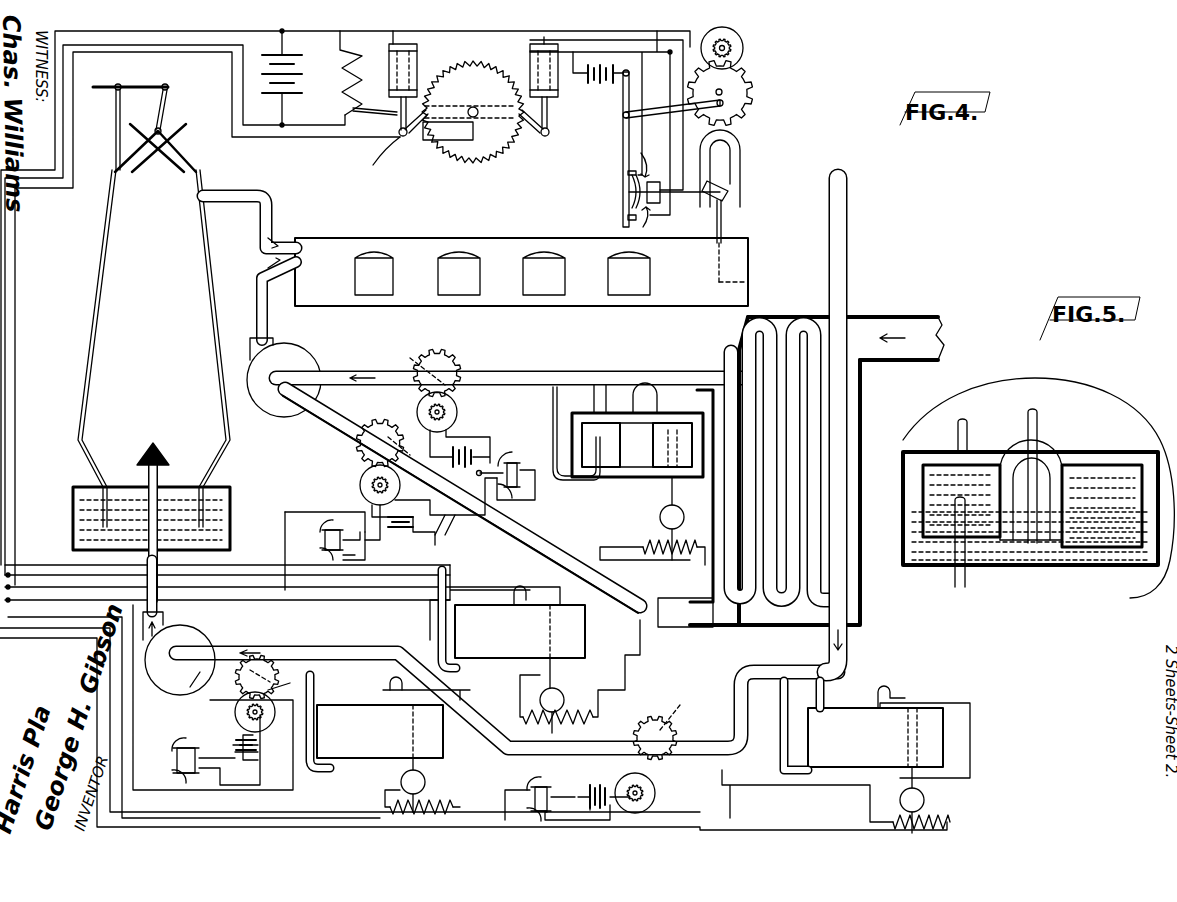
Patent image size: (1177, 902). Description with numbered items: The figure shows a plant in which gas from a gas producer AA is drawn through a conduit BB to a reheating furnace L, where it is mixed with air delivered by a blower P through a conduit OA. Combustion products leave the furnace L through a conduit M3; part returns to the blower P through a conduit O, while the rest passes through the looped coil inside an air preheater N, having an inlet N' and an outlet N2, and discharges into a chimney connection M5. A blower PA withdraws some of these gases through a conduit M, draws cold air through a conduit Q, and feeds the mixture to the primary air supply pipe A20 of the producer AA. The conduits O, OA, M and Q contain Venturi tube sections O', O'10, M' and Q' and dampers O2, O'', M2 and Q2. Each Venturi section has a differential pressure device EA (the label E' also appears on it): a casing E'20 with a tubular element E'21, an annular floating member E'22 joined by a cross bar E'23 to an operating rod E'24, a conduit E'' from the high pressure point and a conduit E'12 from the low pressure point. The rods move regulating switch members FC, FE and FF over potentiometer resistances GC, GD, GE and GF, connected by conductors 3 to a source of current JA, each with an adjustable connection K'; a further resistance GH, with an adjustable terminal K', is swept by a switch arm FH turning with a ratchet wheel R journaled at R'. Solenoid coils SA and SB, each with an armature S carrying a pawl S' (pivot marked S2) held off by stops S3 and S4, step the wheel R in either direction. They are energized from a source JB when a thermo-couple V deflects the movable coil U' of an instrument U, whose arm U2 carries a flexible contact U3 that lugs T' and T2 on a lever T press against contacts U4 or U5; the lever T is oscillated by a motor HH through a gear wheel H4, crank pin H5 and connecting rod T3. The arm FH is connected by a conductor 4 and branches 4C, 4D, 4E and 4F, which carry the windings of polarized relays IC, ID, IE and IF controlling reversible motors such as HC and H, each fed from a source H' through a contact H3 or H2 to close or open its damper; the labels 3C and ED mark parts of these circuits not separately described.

In FIG. 4, the conductors 3 is at (205, 33).
In FIG. 4, the conductor 4 is at (62, 193).
In FIG. 4, the adjustable connection K' is at (674, 428).
In FIG. 4, the potentiometer resistance conductor GH is at (345, 75).
In FIG. 4, the source of current JA is at (300, 90).
In FIG. 4, the switch arm FH is at (380, 114).
In FIG. 4, the solenoid coil SA is at (417, 52).
In FIG. 4, the solenoid coil SB is at (530, 60).
In FIG. 4, the ratchet wheel R is at (473, 112).
In FIG. 4, the journal R' is at (487, 103).
In FIG. 4, the pawl S' is at (470, 120).
In FIG. 4, the armature S is at (467, 145).
In FIG. 4, the pawl pivot S2 is at (405, 136).
In FIG. 4, the stop S3 is at (437, 140).
In FIG. 4, the stop S4 is at (540, 136).
In FIG. 4, the source of current JB is at (594, 86).
In FIG. 4, the lever T is at (606, 129).
In FIG. 4, the connecting rod T3 is at (635, 105).
In FIG. 4, the lug T' is at (609, 165).
In FIG. 4, the lug T2 is at (626, 218).
In FIG. 4, the electrical instrument U is at (735, 168).
In FIG. 4, the movable coil U' is at (737, 190).
In FIG. 4, the pointer arm U2 is at (710, 241).
In FIG. 4, the flexible contact device U3 is at (625, 192).
In FIG. 4, the contacts U4 is at (643, 160).
In FIG. 4, the contacts U5 is at (656, 224).
In FIG. 4, the electric motor HH is at (743, 51).
In FIG. 4, the gear wheel H4 is at (745, 98).
In FIG. 4, the crank pin H5 is at (740, 110).
In FIG. 4, the thermo-couple V is at (752, 280).
In FIG. 4, the reheating furnace L is at (360, 243).
In FIG. 4, the gas producer AA is at (88, 275).
In FIG. 4, the branch conductor 4C is at (285, 517).
In FIG. 4, the conduit BB is at (245, 193).
In FIG. 4, the blower P is at (300, 362).
In FIG. 4, the conduit O is at (509, 360).
In FIG. 4, the conduit OA is at (330, 418).
In FIG. 4, the Venturi tube section O' is at (573, 355).
In FIG. 4, the conduit M3 is at (730, 330).
In FIG. 4, the outlet N2 is at (704, 622).
In FIG. 4, the damper O2 is at (430, 367).
In FIG. 4, the damper O'' is at (383, 435).
In FIG. 4, the motor HC is at (458, 422).
In FIG. 4, the motor terminal contact H3 is at (533, 606).
In FIG. 4, the source of current H' is at (504, 624).
In FIG. 4, the polarized relay IC is at (520, 492).
In FIG. 4, the reversible electric motor H is at (460, 639).
In FIG. 4, the motor contact H2 is at (493, 658).
In FIG. 4, the relay ID is at (323, 532).
In FIG. 4, the Venturi tube section O'10 is at (466, 532).
In FIG. 4, the conduit E'' is at (647, 521).
In FIG. 5, the conduit E'' is at (978, 435).
In FIG. 4, the conduit E'12 is at (580, 570).
In FIG. 5, the conduit E'12 is at (981, 554).
In FIG. 4, the differential pressure device EA is at (580, 423).
In FIG. 5, the differential pressure device EA is at (922, 568).
In FIG. 4, the regulating switch member FC is at (668, 490).
In FIG. 4, the potentiometer resistance GC is at (660, 520).
In FIG. 4, the circuit 3C is at (610, 565).
In FIG. 4, the inlet N' is at (859, 338).
In FIG. 4, the air preheating device N is at (799, 471).
In FIG. 4, the conduit M is at (529, 537).
In FIG. 4, the chimney connection M5 is at (848, 262).
In FIG. 4, the Venturi tube section M' is at (778, 654).
In FIG. 4, the damper M2 is at (665, 727).
In FIG. 4, the primary air supply pipe A20 is at (158, 600).
In FIG. 4, the blower PA is at (200, 640).
In FIG. 4, the conduit Q is at (191, 689).
In FIG. 4, the damper Q2 is at (268, 676).
In FIG. 4, the Venturi tube section Q' is at (283, 717).
In FIG. 4, the conductor 4E is at (175, 810).
In FIG. 4, the relay IE is at (180, 765).
In FIG. 4, the branch conductor 4D is at (298, 590).
In FIG. 4, the rod ED is at (586, 660).
In FIG. 4, the potentiometer resistance GD is at (585, 710).
In FIG. 4, the regulating switch member FF is at (450, 755).
In FIG. 4, the potentiometer resistance GF is at (425, 785).
In FIG. 4, the relay IF is at (528, 786).
In FIG. 4, the branch conductor 4F is at (945, 703).
In FIG. 4, the regulating switch member FE is at (850, 800).
In FIG. 4, the potentiometer resistance GE is at (849, 799).
In FIG. 5, the casing E'20 is at (930, 502).
In FIG. 5, the annular floating member E'22 is at (1102, 538).
In FIG. 5, the central chamber E' is at (1042, 483).
In FIG. 5, the tubular element E'21 is at (1070, 483).
In FIG. 5, the operating rod E'24 is at (1056, 471).
In FIG. 5, the cross bar E'23 is at (1036, 575).